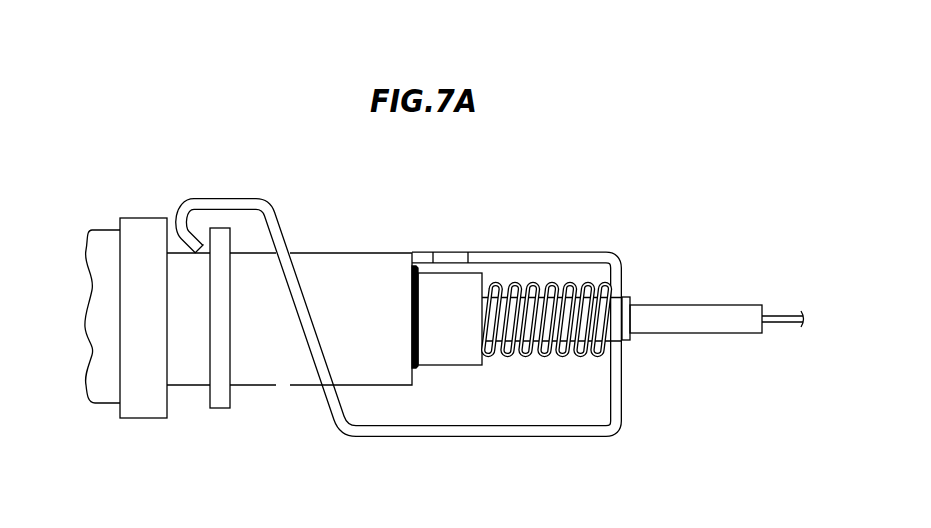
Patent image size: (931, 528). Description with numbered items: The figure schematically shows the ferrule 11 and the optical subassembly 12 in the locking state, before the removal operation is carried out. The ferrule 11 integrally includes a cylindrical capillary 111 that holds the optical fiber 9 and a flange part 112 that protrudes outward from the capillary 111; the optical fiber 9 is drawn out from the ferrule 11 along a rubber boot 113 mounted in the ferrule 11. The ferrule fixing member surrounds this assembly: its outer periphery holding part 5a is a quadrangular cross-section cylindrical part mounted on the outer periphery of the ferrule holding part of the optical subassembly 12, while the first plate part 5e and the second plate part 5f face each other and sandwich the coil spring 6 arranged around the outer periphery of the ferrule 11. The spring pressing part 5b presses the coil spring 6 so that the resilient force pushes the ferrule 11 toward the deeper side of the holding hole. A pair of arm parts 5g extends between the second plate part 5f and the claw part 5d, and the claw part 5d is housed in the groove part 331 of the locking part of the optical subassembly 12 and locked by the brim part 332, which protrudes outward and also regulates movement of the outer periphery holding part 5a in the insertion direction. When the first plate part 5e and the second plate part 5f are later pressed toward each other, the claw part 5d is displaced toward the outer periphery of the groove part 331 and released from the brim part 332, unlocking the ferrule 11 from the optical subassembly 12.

The optical subassembly 12 is at (123, 423).
The groove part 331 is at (187, 385).
The brim part 332 is at (220, 400).
The outer periphery holding part 5a is at (375, 263).
The spring pressing part 5b is at (617, 385).
The claw part 5d is at (195, 238).
The first plate part 5e is at (528, 258).
The second plate part 5f is at (462, 432).
The arm parts 5g is at (302, 297).
The coil spring 6 is at (568, 283).
The optical fiber 9 is at (790, 312).
The ferrule 11 is at (590, 375).
The capillary 111 is at (535, 332).
The flange part 112 is at (460, 355).
The rubber boot 113 is at (702, 312).